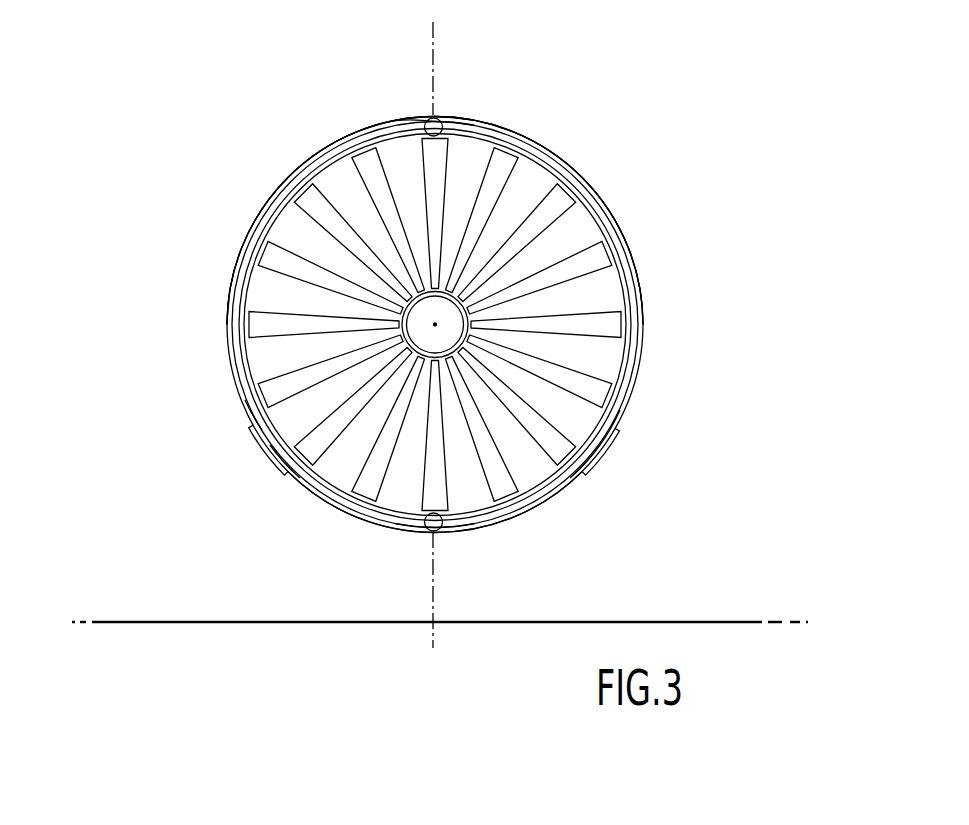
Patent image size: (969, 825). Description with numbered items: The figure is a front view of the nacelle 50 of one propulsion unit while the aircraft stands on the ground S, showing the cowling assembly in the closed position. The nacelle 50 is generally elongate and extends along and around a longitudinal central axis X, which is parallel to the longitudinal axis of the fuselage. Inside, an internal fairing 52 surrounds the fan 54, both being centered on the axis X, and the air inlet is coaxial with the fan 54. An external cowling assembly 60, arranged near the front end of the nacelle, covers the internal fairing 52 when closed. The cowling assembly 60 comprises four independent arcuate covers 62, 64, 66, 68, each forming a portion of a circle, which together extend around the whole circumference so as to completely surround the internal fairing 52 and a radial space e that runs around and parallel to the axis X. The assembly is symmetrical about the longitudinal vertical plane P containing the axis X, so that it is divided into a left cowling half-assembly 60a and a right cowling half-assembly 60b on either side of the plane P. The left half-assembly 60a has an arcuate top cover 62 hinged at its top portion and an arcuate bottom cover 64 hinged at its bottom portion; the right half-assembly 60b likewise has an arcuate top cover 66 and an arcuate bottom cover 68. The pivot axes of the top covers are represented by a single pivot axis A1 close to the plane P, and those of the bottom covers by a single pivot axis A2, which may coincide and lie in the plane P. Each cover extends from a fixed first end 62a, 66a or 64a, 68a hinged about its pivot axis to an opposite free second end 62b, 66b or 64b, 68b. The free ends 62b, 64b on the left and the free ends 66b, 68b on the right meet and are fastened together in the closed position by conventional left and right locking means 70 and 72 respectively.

The nacelle 50 is at (660, 122).
The internal fairing 52 is at (630, 266).
The fan 54 is at (568, 243).
The cowling assembly 60 is at (293, 123).
The left cowling half-assembly 60a is at (263, 193).
The right cowling half-assembly 60b is at (566, 146).
The top cover 62 is at (236, 250).
The first end 62a is at (428, 124).
The second end 62b is at (256, 423).
The bottom cover 64 is at (328, 502).
The first end 64a is at (421, 532).
The second end 64b is at (285, 468).
The top cover 66 is at (650, 298).
The first end 66a is at (442, 124).
The second end 66b is at (608, 436).
The bottom cover 68 is at (547, 507).
The first end 68a is at (446, 532).
The second end 68b is at (583, 470).
The left locking means 70 is at (260, 447).
The right locking means 72 is at (606, 458).
The radial space e is at (276, 293).
The longitudinal vertical plane P is at (430, 48).
The pivot axis A1 is at (438, 118).
The pivot axis A2 is at (440, 535).
The longitudinal central axis X is at (436, 326).
The ground S is at (252, 620).